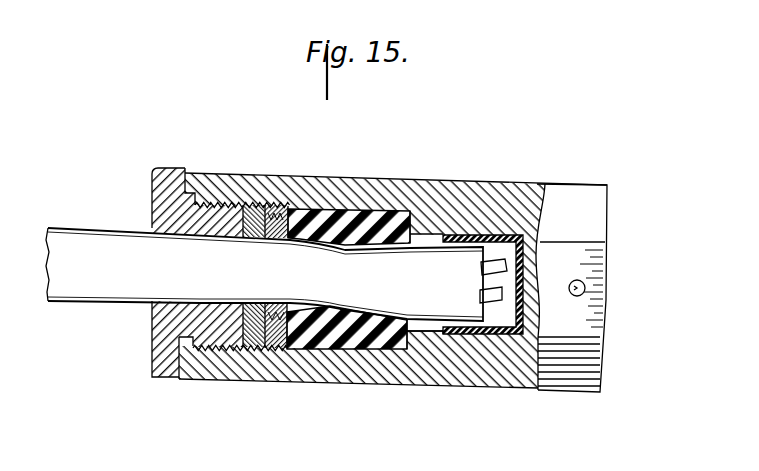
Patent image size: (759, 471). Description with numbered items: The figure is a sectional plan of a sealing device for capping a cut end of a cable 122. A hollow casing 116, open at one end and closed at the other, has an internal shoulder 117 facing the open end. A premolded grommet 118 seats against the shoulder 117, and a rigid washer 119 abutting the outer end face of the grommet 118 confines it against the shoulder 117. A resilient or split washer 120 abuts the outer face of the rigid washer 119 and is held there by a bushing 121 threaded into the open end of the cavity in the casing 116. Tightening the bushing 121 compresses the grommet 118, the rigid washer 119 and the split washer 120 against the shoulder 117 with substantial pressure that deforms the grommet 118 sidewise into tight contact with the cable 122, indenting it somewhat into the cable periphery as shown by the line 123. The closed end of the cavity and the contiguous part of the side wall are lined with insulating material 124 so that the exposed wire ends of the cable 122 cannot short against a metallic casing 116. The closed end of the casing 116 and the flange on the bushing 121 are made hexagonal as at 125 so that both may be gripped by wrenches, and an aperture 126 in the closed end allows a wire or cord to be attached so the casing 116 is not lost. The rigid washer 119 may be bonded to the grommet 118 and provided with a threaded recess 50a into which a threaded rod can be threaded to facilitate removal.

The threaded recess 50a is at (277, 206).
The hollow casing 116 is at (398, 381).
The internal shoulder 117 is at (405, 350).
The premolded grommet 118 is at (290, 350).
The rigid washer 119 is at (258, 340).
The resilient or split washer 120 is at (250, 350).
The bushing 121 is at (157, 325).
The cable 122 is at (247, 288).
The indentation line 123 is at (352, 249).
The insulating material 124 is at (493, 336).
The hexagonal portion 125 is at (595, 225).
The aperture 126 is at (580, 289).